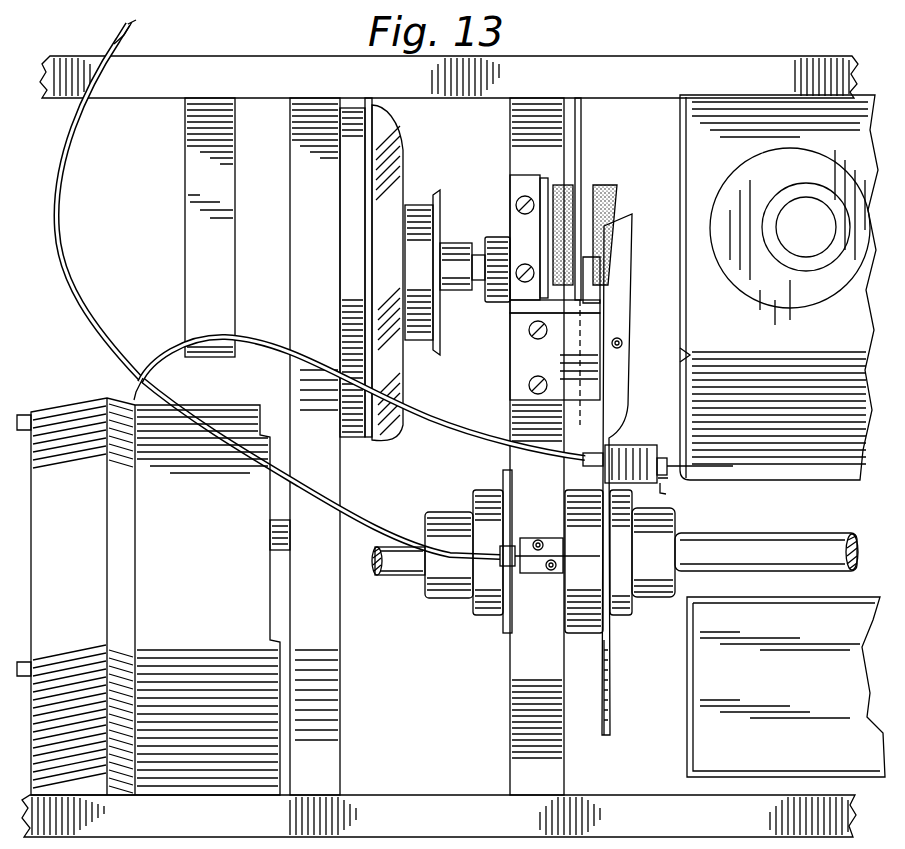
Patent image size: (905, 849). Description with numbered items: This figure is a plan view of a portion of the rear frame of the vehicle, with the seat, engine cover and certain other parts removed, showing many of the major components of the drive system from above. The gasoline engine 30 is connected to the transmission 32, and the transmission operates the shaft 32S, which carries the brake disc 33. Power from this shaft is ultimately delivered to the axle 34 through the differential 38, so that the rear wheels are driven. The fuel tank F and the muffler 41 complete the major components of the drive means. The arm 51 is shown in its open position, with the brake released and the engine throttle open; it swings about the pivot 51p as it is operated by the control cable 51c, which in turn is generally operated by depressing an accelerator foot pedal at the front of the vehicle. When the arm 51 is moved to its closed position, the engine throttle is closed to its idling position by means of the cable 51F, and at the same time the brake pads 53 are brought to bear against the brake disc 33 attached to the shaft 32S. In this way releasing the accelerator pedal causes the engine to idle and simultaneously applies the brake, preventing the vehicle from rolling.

The gasoline engine 30 is at (148, 596).
The transmission 32 is at (388, 173).
The shaft 32S is at (475, 254).
The brake disc 33 is at (583, 155).
The brake pads 53 is at (553, 184).
The arm 51 is at (628, 401).
The pivot 51p is at (628, 346).
The cable 51F is at (450, 424).
The control cable 51c is at (380, 523).
The axle 34 is at (800, 540).
The differential 38 is at (505, 634).
The muffler 41 is at (786, 687).
The fuel tank F is at (850, 465).